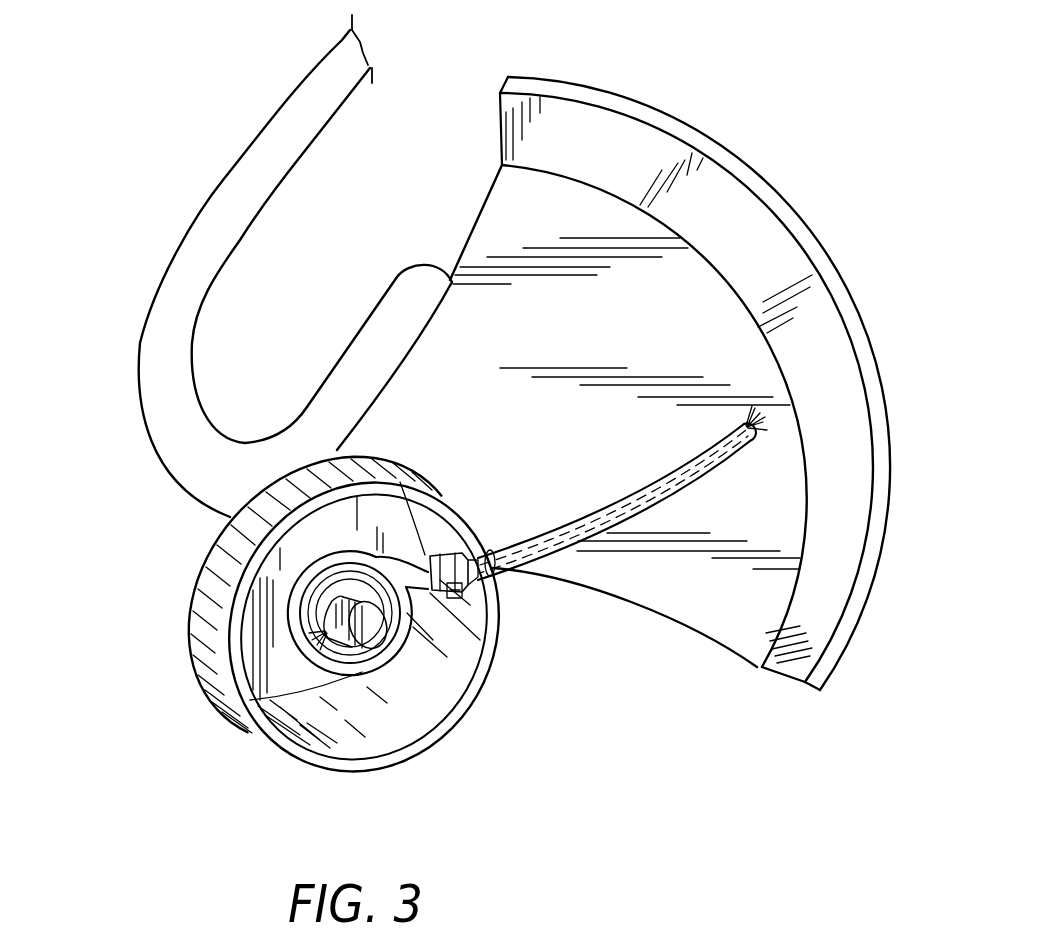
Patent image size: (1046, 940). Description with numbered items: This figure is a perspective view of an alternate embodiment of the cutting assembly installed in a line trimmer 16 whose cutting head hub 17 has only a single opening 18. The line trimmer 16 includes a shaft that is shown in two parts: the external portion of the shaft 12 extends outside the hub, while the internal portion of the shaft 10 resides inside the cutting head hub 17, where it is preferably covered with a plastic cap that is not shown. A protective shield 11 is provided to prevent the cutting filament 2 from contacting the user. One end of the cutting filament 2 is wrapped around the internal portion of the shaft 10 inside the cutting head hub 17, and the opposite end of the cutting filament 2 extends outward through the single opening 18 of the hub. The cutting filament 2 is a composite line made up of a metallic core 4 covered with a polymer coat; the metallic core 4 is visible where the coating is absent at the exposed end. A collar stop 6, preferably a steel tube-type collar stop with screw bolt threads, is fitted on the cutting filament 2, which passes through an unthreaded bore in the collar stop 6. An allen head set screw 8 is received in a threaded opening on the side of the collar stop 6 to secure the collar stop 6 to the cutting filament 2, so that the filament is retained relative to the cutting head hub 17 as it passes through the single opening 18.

The cutting filament 2 is at (397, 668).
The metallic core 4 is at (758, 436).
The collar stop 6 is at (497, 582).
The allen head set screw 8 is at (462, 598).
The internal portion of the shaft 10 is at (368, 640).
The protective shield 11 is at (864, 590).
The external portion of the shaft 12 is at (197, 308).
The line trimmer 16 is at (90, 412).
The cutting head hub 17 is at (287, 753).
The single opening 18 is at (490, 540).